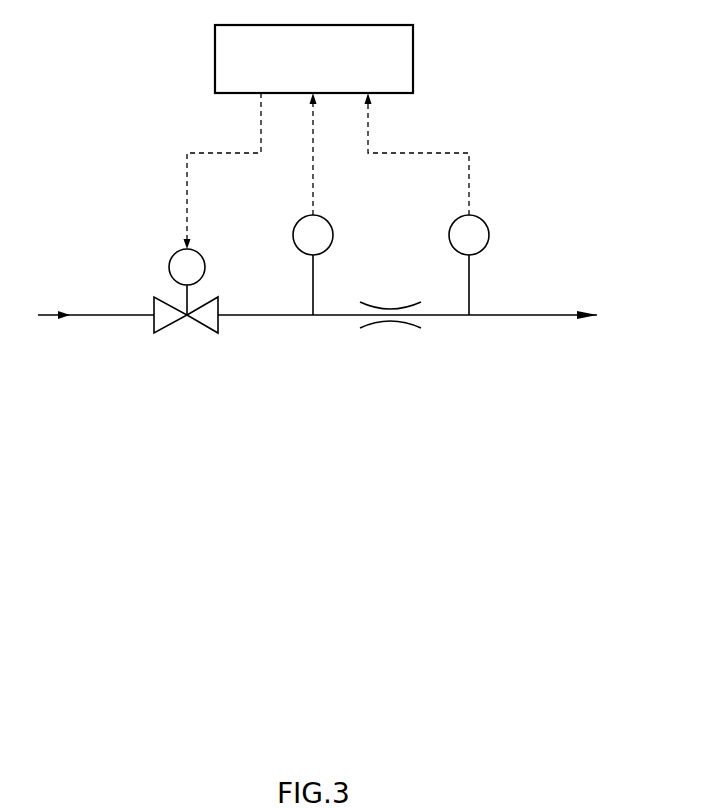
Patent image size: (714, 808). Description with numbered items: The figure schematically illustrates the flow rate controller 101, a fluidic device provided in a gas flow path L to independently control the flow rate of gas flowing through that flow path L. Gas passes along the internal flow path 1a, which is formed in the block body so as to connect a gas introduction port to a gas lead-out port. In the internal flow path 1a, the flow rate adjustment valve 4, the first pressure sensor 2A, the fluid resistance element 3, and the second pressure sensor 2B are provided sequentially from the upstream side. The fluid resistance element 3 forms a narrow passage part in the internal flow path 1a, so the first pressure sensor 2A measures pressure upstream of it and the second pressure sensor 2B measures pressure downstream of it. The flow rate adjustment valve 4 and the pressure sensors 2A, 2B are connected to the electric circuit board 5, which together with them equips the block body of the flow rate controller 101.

The flow rate controller 101 is at (143, 49).
The electric circuit board 5 is at (413, 58).
The flow rate adjustment valve 4 is at (172, 252).
The first pressure sensor 2A is at (293, 222).
The second pressure sensor 2B is at (450, 222).
The fluid resistance element 3 is at (391, 336).
The internal flow path 1a is at (449, 343).
The flow path L is at (101, 302).